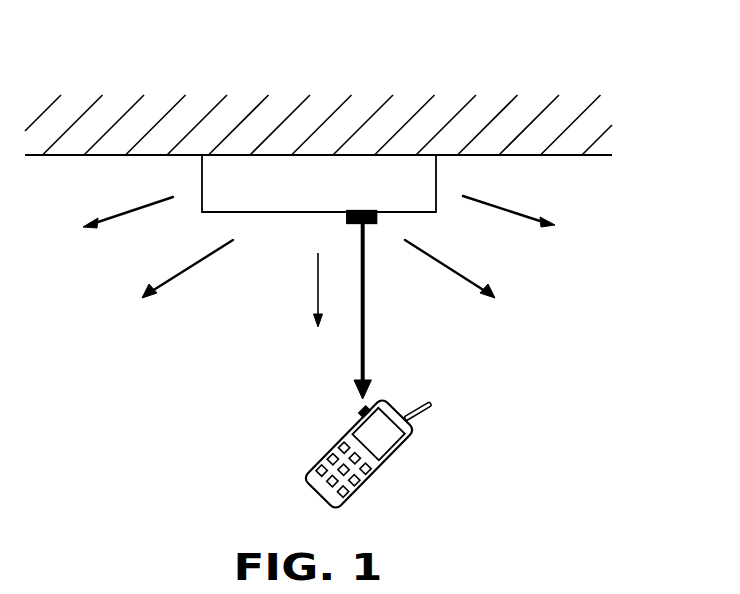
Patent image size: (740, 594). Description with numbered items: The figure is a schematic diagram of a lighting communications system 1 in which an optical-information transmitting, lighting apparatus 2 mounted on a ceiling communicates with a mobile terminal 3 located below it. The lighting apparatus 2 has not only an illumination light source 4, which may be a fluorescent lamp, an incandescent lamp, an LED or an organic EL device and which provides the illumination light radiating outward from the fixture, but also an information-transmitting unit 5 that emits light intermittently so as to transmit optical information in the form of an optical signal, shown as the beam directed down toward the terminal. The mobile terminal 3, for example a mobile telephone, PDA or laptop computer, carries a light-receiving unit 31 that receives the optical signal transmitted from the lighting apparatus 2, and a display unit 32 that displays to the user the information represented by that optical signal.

The lighting communications system 1 is at (410, 88).
The optical-information transmitting, lighting apparatus 2 is at (319, 172).
The mobile terminal 3 is at (378, 458).
The illumination light source 4 is at (265, 203).
The information-transmitting unit 5 is at (372, 225).
The light-receiving unit 31 is at (356, 413).
The display unit 32 is at (386, 445).